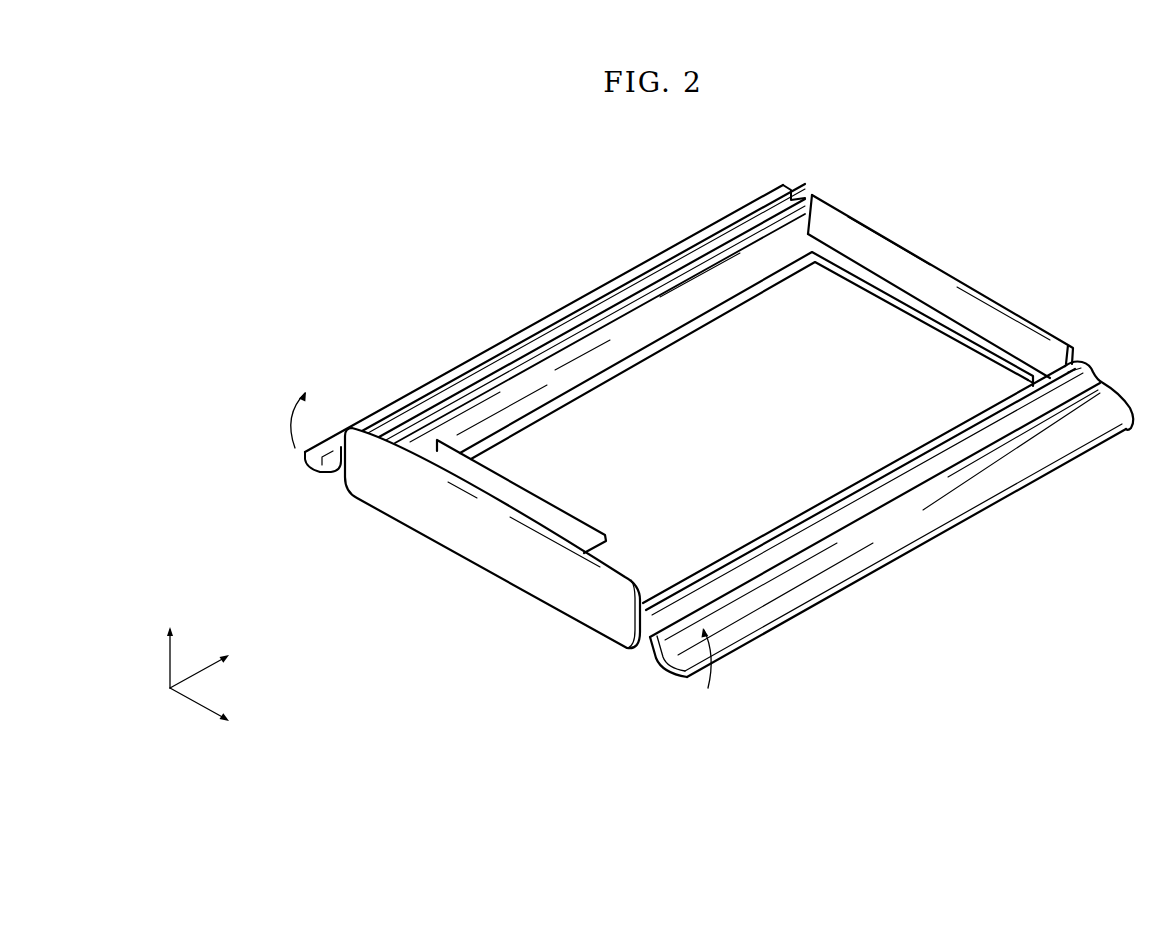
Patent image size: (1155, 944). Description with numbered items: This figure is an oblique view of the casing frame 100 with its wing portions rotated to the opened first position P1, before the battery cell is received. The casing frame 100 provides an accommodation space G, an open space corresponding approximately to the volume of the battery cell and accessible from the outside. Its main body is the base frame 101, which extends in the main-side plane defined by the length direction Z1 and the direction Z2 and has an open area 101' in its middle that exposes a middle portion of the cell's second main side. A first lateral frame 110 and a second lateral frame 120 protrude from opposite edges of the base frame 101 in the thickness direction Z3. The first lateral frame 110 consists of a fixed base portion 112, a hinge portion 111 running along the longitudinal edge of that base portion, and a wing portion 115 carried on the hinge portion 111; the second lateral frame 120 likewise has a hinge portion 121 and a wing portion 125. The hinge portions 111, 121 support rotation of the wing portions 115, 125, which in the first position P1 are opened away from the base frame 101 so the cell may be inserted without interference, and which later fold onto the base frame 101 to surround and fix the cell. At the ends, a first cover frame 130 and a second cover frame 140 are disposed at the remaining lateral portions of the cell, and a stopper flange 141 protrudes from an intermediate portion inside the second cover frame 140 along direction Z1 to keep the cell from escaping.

The casing frame 100 is at (372, 576).
The base frame 101 is at (929, 274).
The open area 101' is at (997, 321).
The first lateral frame 110 is at (550, 306).
The hinge portion 111 is at (789, 190).
The base portion 112 is at (727, 263).
The wing portion 115 is at (670, 247).
The second lateral frame 120 is at (978, 522).
The hinge portion 121 is at (1087, 373).
The wing portion 125 is at (1063, 445).
The first cover frame 130 is at (970, 272).
The second cover frame 140 is at (520, 578).
The flange 141 is at (573, 525).
The accommodation space G is at (686, 367).
The first position P1 is at (910, 553).
The length direction Z1 is at (214, 665).
The main-side direction Z2 is at (214, 714).
The thickness direction Z3 is at (172, 642).